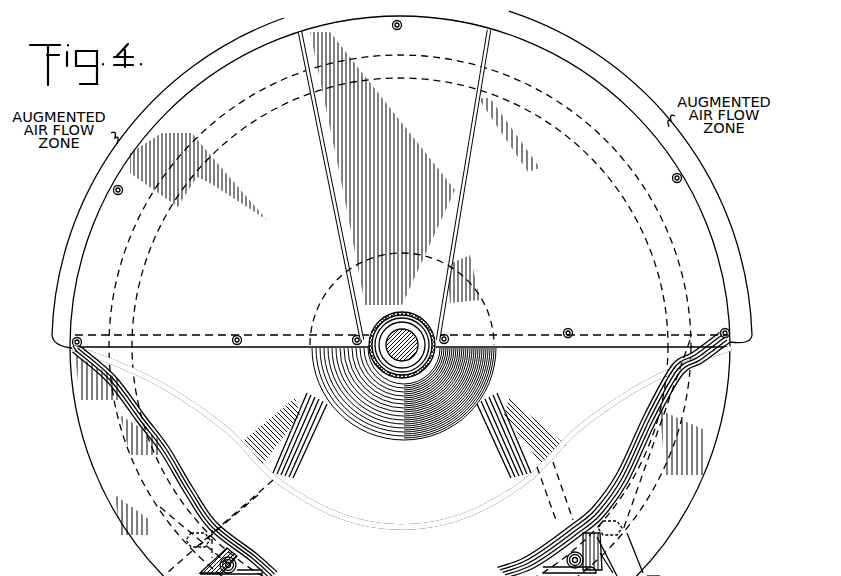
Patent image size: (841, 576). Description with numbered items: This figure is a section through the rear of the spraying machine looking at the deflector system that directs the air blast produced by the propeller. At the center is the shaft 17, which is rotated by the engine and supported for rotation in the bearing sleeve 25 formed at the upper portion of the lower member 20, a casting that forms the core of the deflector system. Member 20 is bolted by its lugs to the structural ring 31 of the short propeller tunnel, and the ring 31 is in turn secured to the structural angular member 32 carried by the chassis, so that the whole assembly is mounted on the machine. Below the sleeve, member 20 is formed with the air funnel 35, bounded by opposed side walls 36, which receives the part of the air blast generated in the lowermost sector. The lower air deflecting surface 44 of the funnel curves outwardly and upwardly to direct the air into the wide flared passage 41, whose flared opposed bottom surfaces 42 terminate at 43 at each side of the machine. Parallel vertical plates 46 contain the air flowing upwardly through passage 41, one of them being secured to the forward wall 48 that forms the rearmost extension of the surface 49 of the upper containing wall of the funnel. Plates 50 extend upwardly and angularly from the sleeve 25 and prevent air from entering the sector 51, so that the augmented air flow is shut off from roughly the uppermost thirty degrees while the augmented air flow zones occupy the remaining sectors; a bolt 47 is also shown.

The shaft 17 is at (404, 338).
The lower member 20 is at (645, 464).
The bearing sleeve 25 is at (373, 362).
The structural ring 31 is at (555, 570).
The structural angular member 32 is at (671, 574).
The air funnel 35 is at (409, 480).
The side walls of the air funnel 36 is at (300, 456).
The flared passage 41 is at (587, 362).
The flared opposed bottom surfaces 42 is at (118, 392).
The terminal surface 43 is at (72, 353).
The lower air deflecting surface 44 is at (402, 437).
The parallel vertical plates 46 is at (251, 260).
The fastening bolts 47 is at (238, 335).
The forward wall 48 is at (178, 336).
The surface of the upper containing wall 49 is at (258, 393).
The plates 50 is at (333, 196).
The sector 51 is at (408, 115).